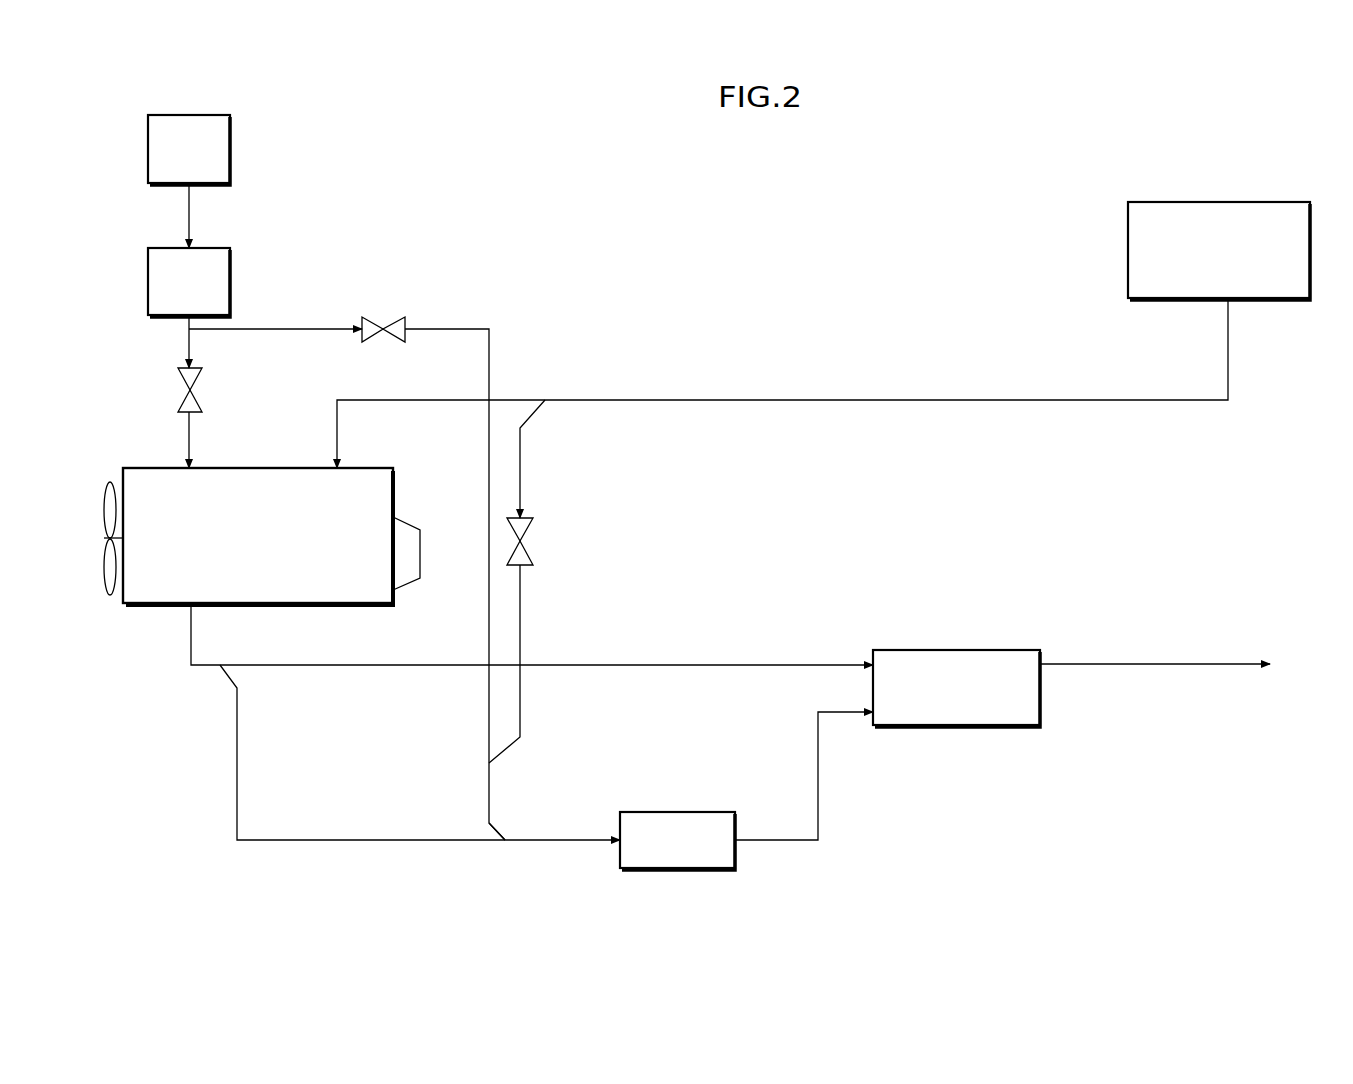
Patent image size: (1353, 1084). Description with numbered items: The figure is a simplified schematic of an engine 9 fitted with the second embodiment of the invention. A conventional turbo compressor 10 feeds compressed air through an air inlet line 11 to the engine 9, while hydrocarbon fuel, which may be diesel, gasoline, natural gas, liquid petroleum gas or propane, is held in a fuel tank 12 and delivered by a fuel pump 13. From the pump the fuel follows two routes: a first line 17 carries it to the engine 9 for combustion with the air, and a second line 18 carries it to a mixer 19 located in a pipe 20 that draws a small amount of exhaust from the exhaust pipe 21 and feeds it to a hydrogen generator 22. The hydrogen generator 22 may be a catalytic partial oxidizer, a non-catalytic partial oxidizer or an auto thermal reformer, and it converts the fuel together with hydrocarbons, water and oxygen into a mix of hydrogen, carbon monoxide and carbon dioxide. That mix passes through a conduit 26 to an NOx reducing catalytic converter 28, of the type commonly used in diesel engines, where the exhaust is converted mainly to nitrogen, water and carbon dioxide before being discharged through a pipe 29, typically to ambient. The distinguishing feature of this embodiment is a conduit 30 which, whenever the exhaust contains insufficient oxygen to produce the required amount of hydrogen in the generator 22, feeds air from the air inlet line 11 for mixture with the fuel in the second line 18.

The engine 9 is at (243, 566).
The turbo compressor 10 is at (1222, 202).
The air inlet line 11 is at (795, 400).
The hydrocarbon fuel tank 12 is at (184, 115).
The fuel pump 13 is at (172, 248).
The first line 17 is at (188, 426).
The second line 18 is at (489, 483).
The mixer 19 is at (507, 830).
The pipe 20 is at (235, 732).
The exhaust pipe 21 is at (341, 665).
The hydrogen generator 22 is at (682, 812).
The conduit 26 is at (820, 755).
The NOx reducing catalytic converter 28 is at (970, 650).
The pipe 29 is at (1165, 664).
The conduit 30 is at (520, 592).